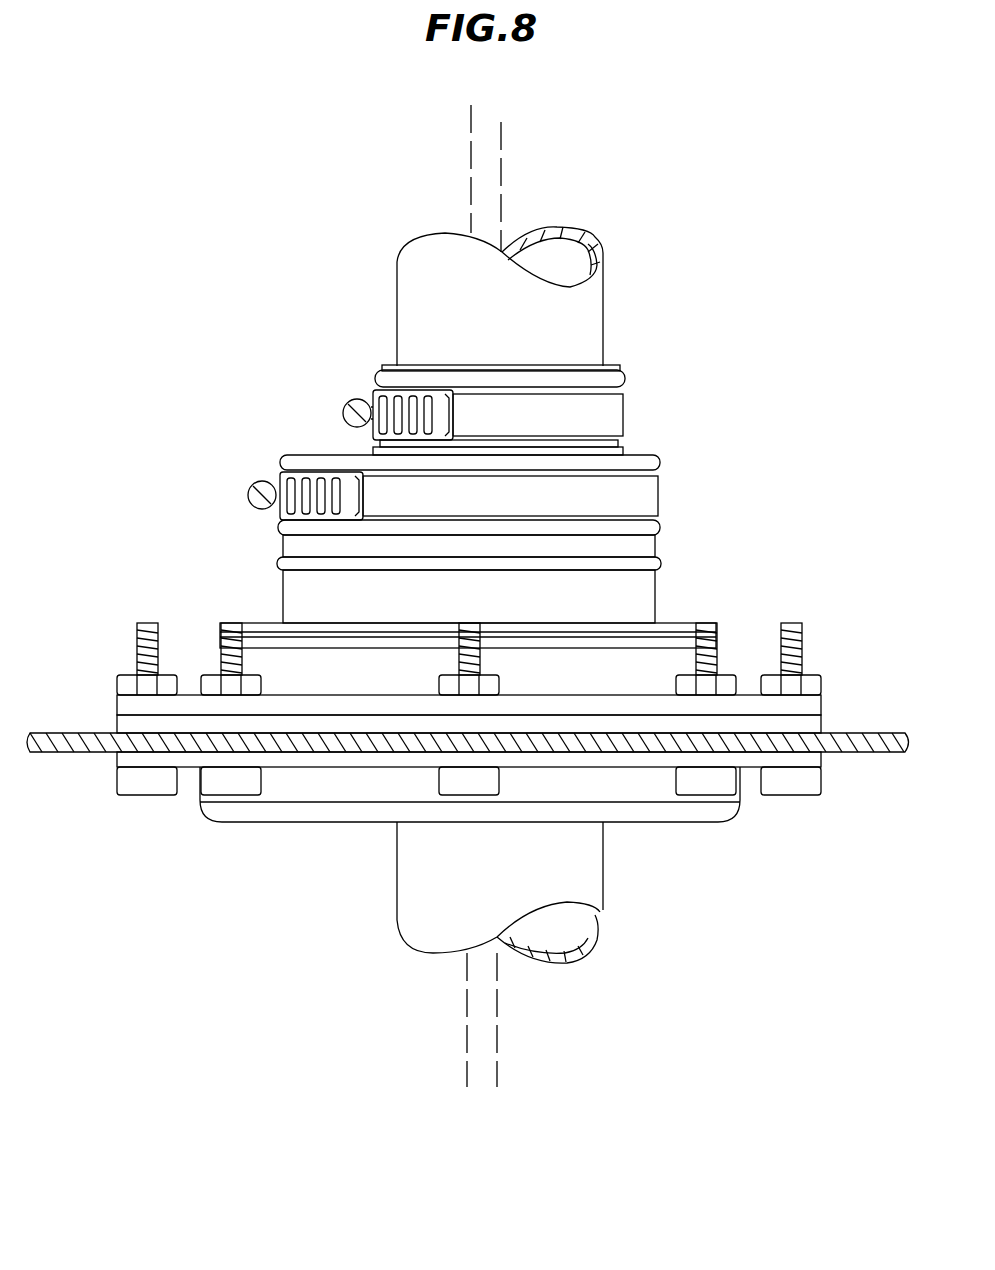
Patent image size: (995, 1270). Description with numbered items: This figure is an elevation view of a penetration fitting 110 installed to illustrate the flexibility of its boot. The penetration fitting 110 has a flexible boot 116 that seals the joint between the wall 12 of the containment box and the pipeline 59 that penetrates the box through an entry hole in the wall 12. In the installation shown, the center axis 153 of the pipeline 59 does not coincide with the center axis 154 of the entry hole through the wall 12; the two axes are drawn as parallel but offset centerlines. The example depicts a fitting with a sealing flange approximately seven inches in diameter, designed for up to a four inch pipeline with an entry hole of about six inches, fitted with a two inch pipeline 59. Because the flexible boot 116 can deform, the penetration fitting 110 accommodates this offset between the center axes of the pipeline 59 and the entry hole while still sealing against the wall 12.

The wall 12 is at (880, 733).
The pipeline 59 is at (572, 860).
The penetration fitting 110 is at (264, 430).
The flexible boot 116 is at (643, 590).
The center axis of the pipeline 153 is at (501, 145).
The center axis of the entry hole 154 is at (471, 170).